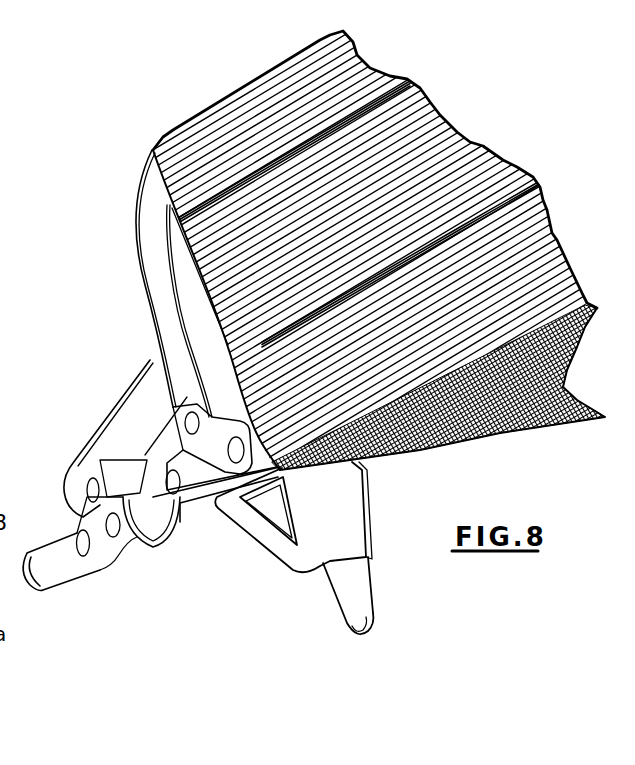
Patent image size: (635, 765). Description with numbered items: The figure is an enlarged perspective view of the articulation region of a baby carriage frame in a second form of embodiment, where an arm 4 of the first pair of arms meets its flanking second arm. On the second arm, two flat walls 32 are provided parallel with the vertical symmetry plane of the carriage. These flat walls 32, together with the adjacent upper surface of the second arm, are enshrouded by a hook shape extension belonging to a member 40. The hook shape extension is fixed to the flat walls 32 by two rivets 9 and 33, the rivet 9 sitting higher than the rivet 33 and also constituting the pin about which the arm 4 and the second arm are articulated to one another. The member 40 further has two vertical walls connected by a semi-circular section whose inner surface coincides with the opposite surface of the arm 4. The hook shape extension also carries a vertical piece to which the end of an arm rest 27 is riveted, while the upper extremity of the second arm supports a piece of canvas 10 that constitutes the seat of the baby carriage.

The piece of canvas 10 is at (541, 428).
The arm rest 27 is at (150, 242).
The rivet 33 is at (168, 482).
The rivet 9 is at (172, 407).
The flat walls 32 is at (168, 537).
The member 40 is at (282, 580).
The arm 4 is at (375, 600).